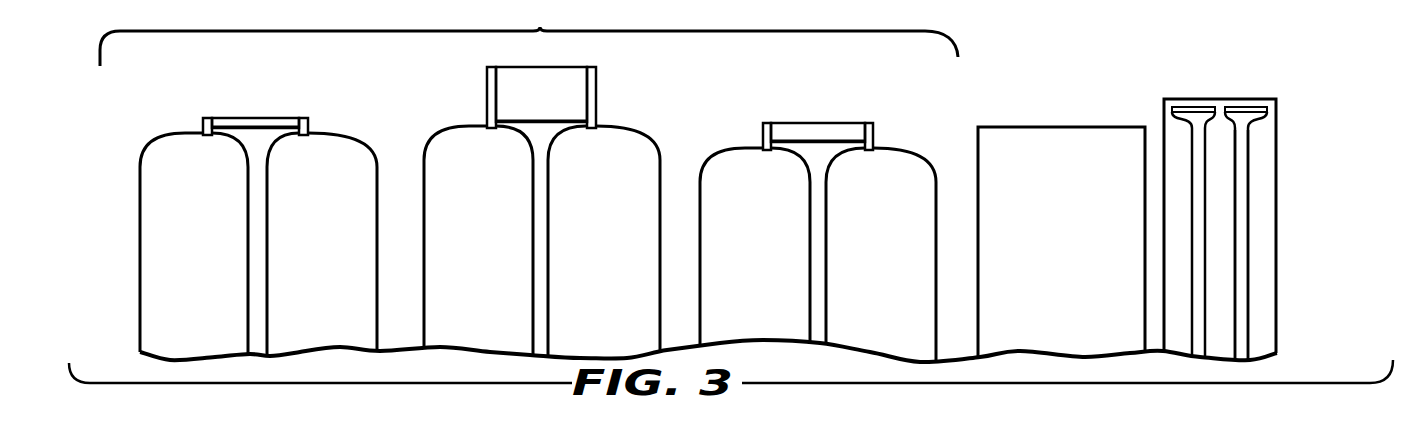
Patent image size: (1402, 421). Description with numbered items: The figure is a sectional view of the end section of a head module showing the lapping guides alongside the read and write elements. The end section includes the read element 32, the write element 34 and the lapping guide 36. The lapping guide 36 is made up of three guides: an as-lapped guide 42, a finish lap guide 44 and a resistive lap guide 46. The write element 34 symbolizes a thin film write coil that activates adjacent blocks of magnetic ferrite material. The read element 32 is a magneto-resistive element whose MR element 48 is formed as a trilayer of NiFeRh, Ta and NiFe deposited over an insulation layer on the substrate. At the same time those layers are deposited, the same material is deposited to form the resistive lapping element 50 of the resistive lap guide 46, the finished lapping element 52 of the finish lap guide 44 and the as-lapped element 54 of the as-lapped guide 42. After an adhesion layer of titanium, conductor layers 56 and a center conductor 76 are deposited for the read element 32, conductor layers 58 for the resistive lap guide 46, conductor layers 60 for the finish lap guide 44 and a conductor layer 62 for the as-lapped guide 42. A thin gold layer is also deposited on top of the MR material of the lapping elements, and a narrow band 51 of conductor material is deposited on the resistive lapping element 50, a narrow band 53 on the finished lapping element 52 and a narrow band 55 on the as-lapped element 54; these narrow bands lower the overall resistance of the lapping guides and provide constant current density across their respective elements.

The read element 32 is at (1260, 210).
The write element 34 is at (1041, 228).
The lapping guide 36 is at (529, 34).
The as-lapped guide 42 is at (226, 217).
The finish lap guide 44 is at (526, 198).
The resistive lap guide 46 is at (809, 219).
The MR element 48 is at (1226, 99).
The resistive lapping element 50 is at (813, 130).
The narrow band of conductor material 51 is at (763, 125).
The finished lapping element 52 is at (563, 80).
The narrow band of conductor material 53 is at (488, 86).
The as-lapped element 54 is at (253, 124).
The narrow band of conductor material 55 is at (201, 118).
The conductor layers 56 is at (1258, 212).
The conductor layers 58 is at (739, 232).
The conductor layers 60 is at (462, 232).
The conductor layer 62 is at (209, 232).
The center conductor 76 is at (1220, 268).